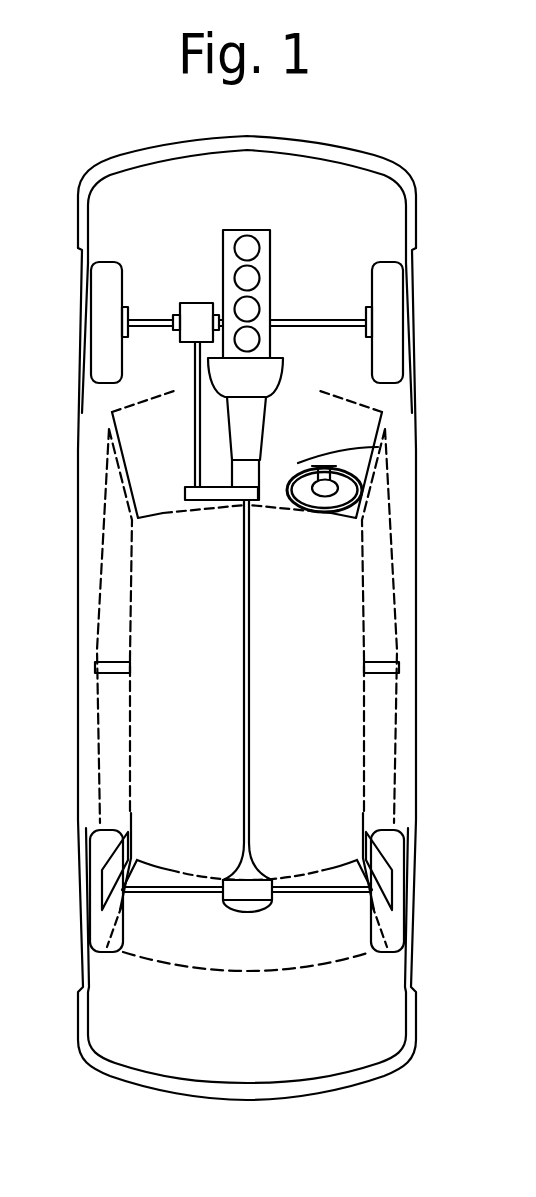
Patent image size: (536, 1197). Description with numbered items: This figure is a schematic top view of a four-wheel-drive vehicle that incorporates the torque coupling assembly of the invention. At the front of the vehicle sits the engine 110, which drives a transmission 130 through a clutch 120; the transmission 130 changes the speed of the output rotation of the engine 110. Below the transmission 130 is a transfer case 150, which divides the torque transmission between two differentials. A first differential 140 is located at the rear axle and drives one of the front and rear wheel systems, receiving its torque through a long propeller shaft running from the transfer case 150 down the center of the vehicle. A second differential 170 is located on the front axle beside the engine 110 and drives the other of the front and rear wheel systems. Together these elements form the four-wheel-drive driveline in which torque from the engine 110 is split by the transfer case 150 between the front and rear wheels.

The engine 110 is at (263, 247).
The clutch 120 is at (270, 380).
The transmission 130 is at (255, 430).
The first differential 140 is at (250, 873).
The transfer case 150 is at (257, 503).
The second differential 170 is at (195, 308).